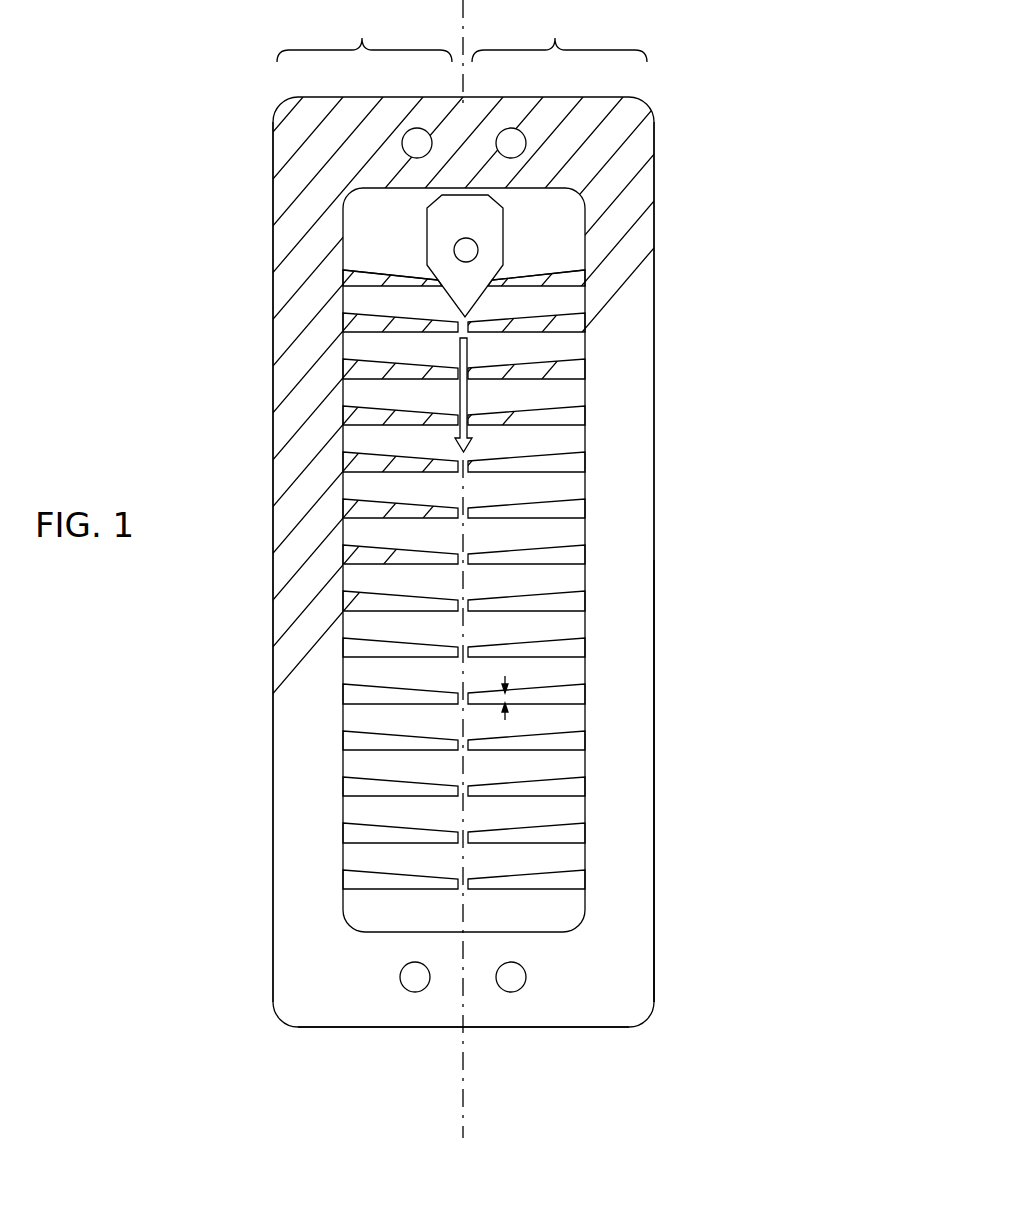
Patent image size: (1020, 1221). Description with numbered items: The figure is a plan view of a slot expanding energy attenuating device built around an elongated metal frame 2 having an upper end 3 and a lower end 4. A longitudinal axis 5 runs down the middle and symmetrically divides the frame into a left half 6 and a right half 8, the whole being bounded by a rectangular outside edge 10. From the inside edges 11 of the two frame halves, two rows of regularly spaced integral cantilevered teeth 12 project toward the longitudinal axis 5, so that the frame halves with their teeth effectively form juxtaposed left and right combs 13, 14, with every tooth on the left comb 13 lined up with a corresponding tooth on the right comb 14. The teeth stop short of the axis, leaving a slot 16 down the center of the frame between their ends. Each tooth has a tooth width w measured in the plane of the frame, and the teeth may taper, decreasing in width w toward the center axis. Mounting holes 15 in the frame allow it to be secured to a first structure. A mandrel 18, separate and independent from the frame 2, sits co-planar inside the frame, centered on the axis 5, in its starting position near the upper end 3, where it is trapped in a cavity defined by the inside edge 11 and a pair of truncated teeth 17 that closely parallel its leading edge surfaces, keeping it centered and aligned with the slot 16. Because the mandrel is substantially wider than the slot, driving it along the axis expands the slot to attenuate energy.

The frame 2 is at (273, 397).
The upper end 3 is at (688, 157).
The lower end 4 is at (690, 985).
The longitudinal axis 5 is at (465, 1055).
The left half 6 is at (364, 36).
The right half 8 is at (559, 36).
The outside edge 10 is at (655, 360).
The inside edge 11 is at (570, 242).
The teeth 12 is at (413, 835).
The left comb 13 is at (243, 713).
The right comb 14 is at (686, 722).
The mounting holes 15 is at (402, 980).
The slot 16 is at (468, 392).
The truncated teeth 17 is at (417, 280).
The mandrel 18 is at (478, 229).
The tooth width w is at (505, 678).